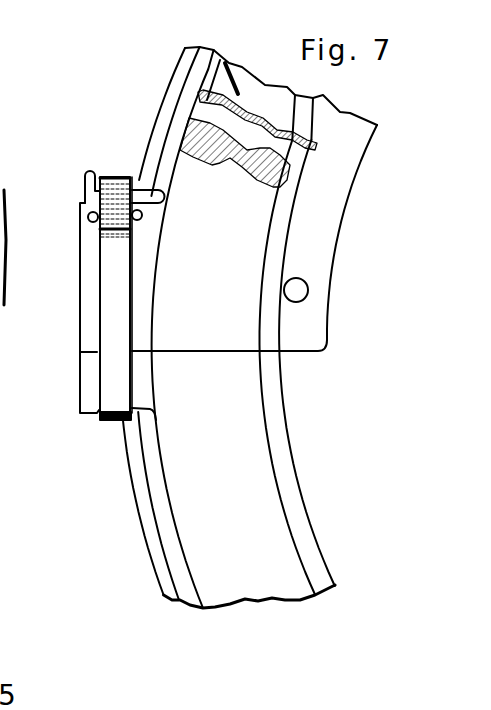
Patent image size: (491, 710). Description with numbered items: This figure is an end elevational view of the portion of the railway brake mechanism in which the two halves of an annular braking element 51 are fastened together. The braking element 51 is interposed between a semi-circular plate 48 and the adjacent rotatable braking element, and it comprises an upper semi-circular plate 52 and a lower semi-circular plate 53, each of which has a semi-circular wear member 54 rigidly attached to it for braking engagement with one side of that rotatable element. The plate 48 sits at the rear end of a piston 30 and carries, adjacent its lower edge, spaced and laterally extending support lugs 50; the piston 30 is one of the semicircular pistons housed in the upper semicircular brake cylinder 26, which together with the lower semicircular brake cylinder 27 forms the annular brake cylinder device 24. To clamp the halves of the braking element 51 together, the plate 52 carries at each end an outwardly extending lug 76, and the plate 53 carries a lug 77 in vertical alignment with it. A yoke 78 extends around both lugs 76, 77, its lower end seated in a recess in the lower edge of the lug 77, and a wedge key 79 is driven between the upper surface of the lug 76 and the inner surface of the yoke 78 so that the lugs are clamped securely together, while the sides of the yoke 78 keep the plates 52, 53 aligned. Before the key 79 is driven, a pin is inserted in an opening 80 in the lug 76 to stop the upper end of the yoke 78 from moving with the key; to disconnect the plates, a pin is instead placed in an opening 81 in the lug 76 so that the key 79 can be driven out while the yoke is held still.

The annular brake cylinder device 24 is at (188, 63).
The upper semicircular brake cylinder 26 is at (178, 82).
The lower semicircular brake cylinder 27 is at (170, 587).
The piston 30 is at (224, 70).
The semi-circular plate 48 is at (340, 173).
The support lug 50 is at (292, 290).
The annular braking element 51 is at (252, 440).
The upper semi-circular plate 52 is at (205, 108).
The lower semi-circular plate 53 is at (283, 477).
The semi-circular wear member 54 is at (187, 161).
The lug 76 is at (92, 257).
The lug 77 is at (87, 385).
The yoke 78 is at (110, 312).
The wedge key 79 is at (87, 178).
The opening 80 is at (142, 215).
The opening 81 is at (88, 217).